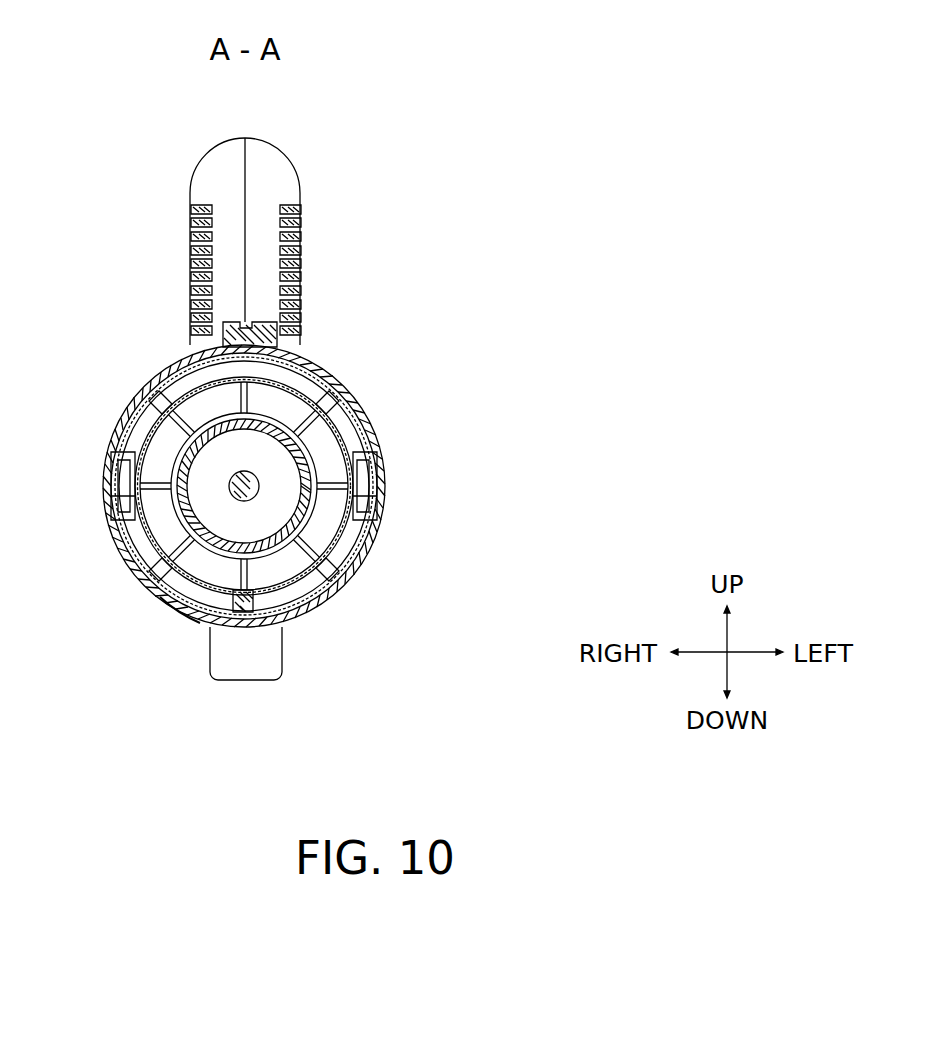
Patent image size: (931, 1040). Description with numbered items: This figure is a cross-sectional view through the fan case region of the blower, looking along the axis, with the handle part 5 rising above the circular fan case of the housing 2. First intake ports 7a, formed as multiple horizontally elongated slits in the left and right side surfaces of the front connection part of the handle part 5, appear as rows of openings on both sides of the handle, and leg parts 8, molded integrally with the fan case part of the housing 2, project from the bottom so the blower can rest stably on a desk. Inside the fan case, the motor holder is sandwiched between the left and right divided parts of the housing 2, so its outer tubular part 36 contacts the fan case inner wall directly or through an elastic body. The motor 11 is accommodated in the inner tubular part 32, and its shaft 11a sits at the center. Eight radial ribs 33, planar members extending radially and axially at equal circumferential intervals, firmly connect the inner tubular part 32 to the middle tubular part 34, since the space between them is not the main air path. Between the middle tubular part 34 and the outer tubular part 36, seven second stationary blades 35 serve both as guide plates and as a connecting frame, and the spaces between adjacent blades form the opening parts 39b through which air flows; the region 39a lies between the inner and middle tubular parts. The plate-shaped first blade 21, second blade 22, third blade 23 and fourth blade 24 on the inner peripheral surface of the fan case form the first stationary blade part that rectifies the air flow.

The housing 2 is at (178, 178).
The handle part 5 is at (275, 162).
The first intake port 7a is at (300, 250).
The leg part 8 is at (254, 682).
The motor 11 is at (295, 448).
The shaft 11a is at (232, 503).
The first blade 21 is at (165, 398).
The second blade 22 is at (133, 452).
The third blade 23 is at (120, 505).
The fourth blade 24 is at (160, 573).
The inner tubular part 32 is at (262, 417).
The radial rib 33 is at (233, 403).
The middle tubular part 34 is at (290, 580).
The second stationary blade 35 is at (265, 375).
The outer tubular part 36 is at (158, 597).
The first gap 39a is at (323, 515).
The opening part 39b is at (198, 377).